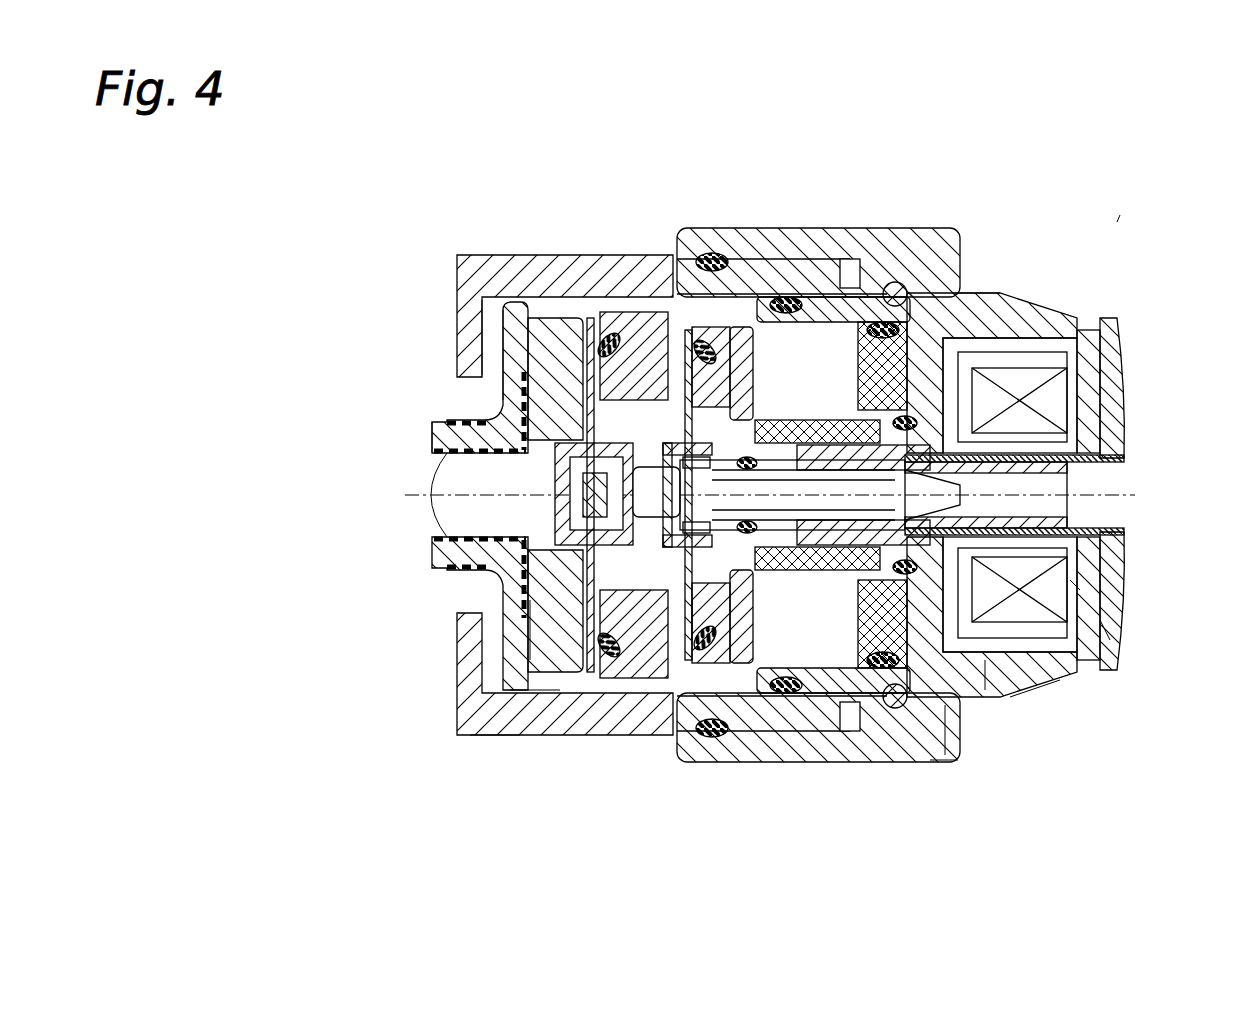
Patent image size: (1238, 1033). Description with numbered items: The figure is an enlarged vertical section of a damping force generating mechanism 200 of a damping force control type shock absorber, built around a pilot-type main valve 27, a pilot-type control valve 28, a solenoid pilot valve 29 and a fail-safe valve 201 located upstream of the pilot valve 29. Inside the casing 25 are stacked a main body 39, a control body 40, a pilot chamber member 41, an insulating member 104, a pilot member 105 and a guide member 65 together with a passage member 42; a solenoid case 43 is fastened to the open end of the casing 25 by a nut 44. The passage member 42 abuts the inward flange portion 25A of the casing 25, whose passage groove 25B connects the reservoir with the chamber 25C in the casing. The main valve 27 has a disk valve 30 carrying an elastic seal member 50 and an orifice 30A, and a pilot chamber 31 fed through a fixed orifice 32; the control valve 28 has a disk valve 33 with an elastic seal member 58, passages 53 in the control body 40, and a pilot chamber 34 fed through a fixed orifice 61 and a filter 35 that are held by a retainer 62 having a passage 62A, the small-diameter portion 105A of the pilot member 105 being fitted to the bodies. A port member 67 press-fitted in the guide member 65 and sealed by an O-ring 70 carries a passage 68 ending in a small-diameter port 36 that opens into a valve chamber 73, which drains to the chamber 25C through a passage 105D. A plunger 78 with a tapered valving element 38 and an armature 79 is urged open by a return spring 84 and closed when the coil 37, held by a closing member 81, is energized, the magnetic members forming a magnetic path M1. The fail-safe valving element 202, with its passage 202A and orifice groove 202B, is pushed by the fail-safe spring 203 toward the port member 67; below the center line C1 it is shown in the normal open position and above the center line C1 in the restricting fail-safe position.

The damping force generating mechanism 200 is at (1118, 218).
The casing 25 is at (527, 466).
The inward flange portion 25A is at (462, 622).
The passage groove 25B is at (470, 290).
The chamber 25C is at (484, 300).
The main valve 27 is at (500, 735).
The control valve 28 is at (831, 763).
The pilot valve 29 is at (955, 300).
The disk valve 30 is at (455, 340).
The orifice 30A is at (512, 300).
The pilot chamber 31 is at (569, 692).
The fixed orifice 32 is at (545, 660).
The disk valve 33 is at (718, 574).
The pilot chamber 34 is at (833, 744).
The filter 35 is at (495, 494).
The port 36 is at (900, 322).
The coil 37 is at (1086, 340).
The valving element 38 is at (1067, 447).
The main body 39 is at (530, 690).
The control body 40 is at (695, 660).
The pilot chamber member 41 is at (786, 693).
The passage member 42 is at (445, 553).
The solenoid case 43 is at (1040, 690).
The nut 44 is at (962, 748).
The elastic seal member 50 is at (590, 318).
The passages 53 is at (661, 574).
The elastic seal member 58 is at (745, 535).
The fixed orifice 61 is at (560, 478).
The retainer 62 is at (443, 419).
The passage 62A is at (500, 500).
The guide member 65 is at (1004, 460).
The port member 67 is at (790, 297).
The passage 68 is at (833, 232).
The O-ring 70 is at (800, 420).
The valve chamber 73 is at (1000, 640).
The plunger 78 is at (1112, 330).
The armature 79 is at (1108, 475).
The closing member 81 is at (1112, 630).
The return spring 84 is at (1020, 455).
The insulating member 104 is at (948, 730).
The pilot member 105 is at (885, 282).
The small-diameter portion 105A is at (855, 762).
The passage 105D is at (895, 745).
The fail-safe valve 201 is at (686, 330).
The fail-safe valving element 202 is at (782, 224).
The passage 202A is at (712, 252).
The orifice groove 202B is at (745, 259).
The fail-safe spring 203 is at (572, 320).
The center line C1 is at (1135, 495).
The magnetic path M1 is at (1110, 580).